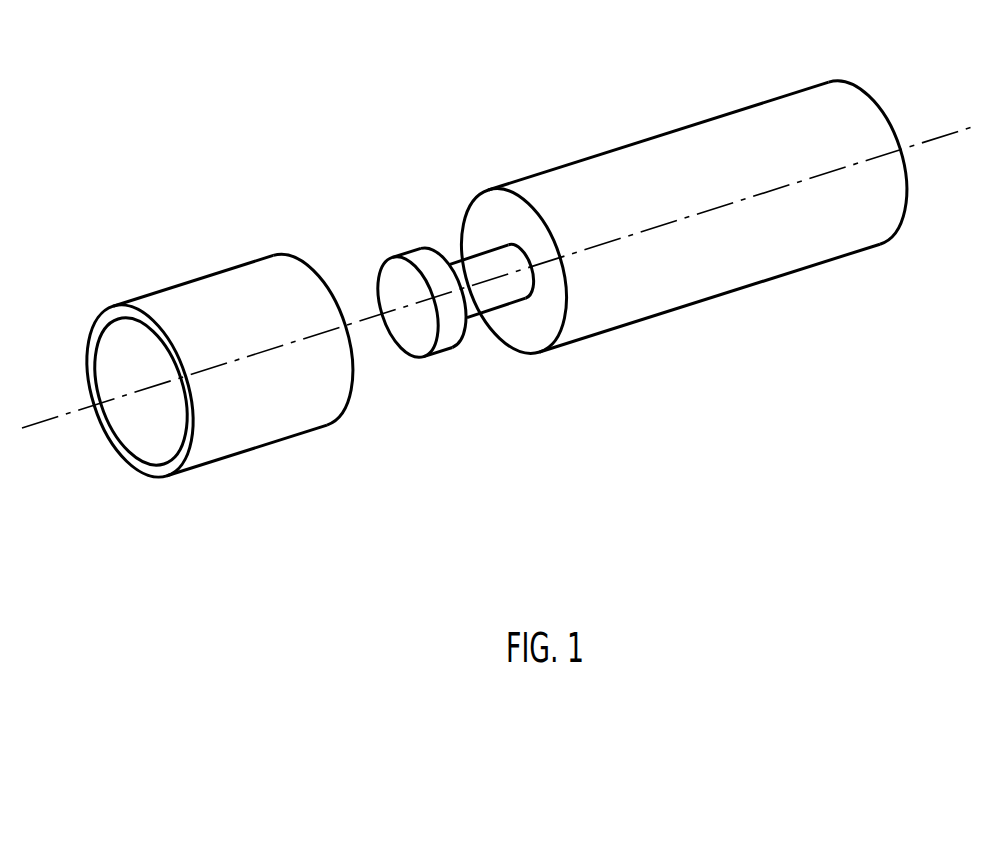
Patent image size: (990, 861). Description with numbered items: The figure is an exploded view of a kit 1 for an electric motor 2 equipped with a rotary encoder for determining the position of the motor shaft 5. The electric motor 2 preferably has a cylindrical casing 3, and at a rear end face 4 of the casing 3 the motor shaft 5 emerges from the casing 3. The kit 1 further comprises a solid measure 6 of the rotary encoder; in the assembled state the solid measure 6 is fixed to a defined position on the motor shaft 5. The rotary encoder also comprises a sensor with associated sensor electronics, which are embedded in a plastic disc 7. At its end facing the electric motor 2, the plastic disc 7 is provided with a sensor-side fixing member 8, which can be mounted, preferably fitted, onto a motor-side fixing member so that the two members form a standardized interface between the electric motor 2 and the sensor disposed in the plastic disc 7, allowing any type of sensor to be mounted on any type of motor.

The kit 1 is at (129, 175).
The electric motor 2 is at (675, 237).
The casing 3 is at (727, 121).
The rear end face 4 is at (532, 335).
The motor shaft 5 is at (482, 267).
The solid measure 6 is at (445, 337).
The plastic disc 7 is at (132, 427).
The sensor-side fixing member 8 is at (308, 417).